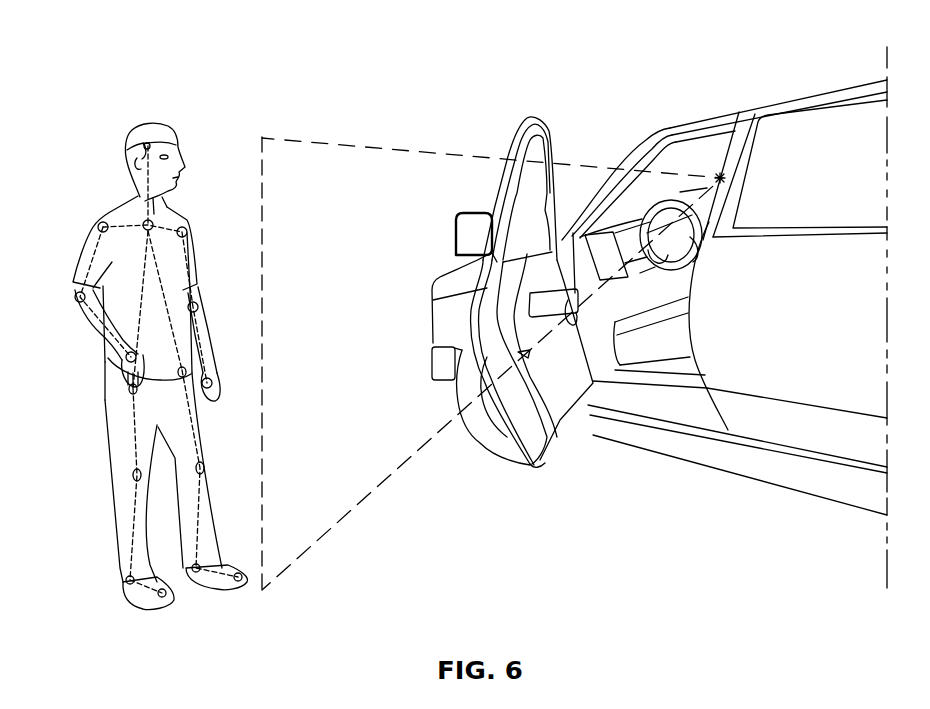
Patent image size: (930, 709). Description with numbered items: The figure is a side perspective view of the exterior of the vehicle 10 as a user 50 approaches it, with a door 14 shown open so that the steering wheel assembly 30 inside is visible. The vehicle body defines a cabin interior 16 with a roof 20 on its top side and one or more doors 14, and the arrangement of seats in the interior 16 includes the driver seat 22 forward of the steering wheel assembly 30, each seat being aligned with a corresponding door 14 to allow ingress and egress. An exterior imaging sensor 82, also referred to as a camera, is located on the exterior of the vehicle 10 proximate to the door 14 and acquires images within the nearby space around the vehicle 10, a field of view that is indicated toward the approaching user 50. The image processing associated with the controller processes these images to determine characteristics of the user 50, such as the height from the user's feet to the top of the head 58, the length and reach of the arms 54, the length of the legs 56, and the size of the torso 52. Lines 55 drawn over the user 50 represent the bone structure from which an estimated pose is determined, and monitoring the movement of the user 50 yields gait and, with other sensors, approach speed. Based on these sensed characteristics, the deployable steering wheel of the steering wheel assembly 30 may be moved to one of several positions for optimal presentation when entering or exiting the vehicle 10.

The vehicle 10 is at (621, 148).
The door 14 is at (510, 144).
The cabin interior 16 is at (673, 167).
The roof 20 is at (722, 112).
The driver seat 22 is at (667, 353).
The steering wheel assembly 30 is at (643, 206).
The user 50 is at (130, 121).
The torso 52 is at (122, 310).
The arms 54 is at (88, 252).
The lines 55 is at (132, 418).
The legs 56 is at (124, 501).
The head 58 is at (156, 123).
The exterior imaging sensor 82 is at (722, 176).